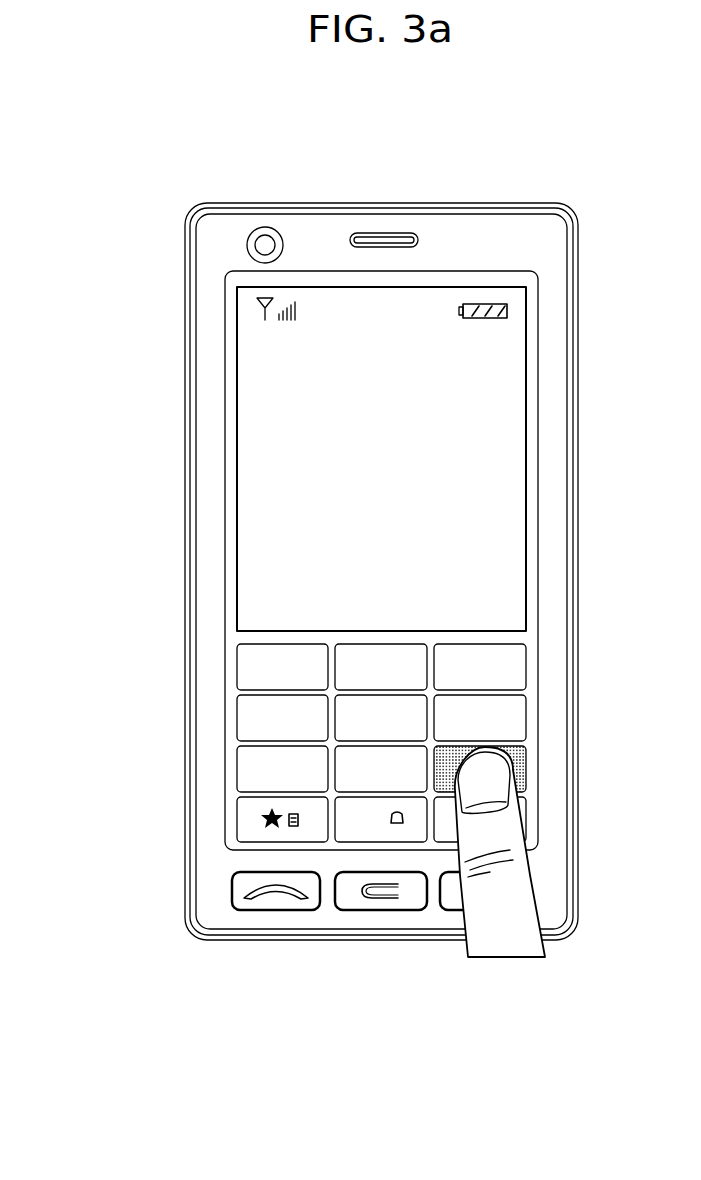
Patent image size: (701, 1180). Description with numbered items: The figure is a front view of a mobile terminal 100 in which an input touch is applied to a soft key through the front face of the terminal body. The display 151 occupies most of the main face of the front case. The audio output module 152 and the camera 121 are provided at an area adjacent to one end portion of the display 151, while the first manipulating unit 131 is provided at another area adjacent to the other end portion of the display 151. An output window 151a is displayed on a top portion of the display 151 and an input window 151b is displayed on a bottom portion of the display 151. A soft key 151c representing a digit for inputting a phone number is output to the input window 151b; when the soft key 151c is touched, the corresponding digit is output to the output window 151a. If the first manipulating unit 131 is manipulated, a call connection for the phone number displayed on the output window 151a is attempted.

The mobile terminal 100 is at (158, 222).
The camera 121 is at (265, 243).
The audio output module 152 is at (393, 240).
The display 151 is at (221, 377).
The output window 151a is at (250, 467).
The input window 151b is at (232, 768).
The soft key 151c is at (252, 670).
The first manipulating unit 131 is at (277, 900).